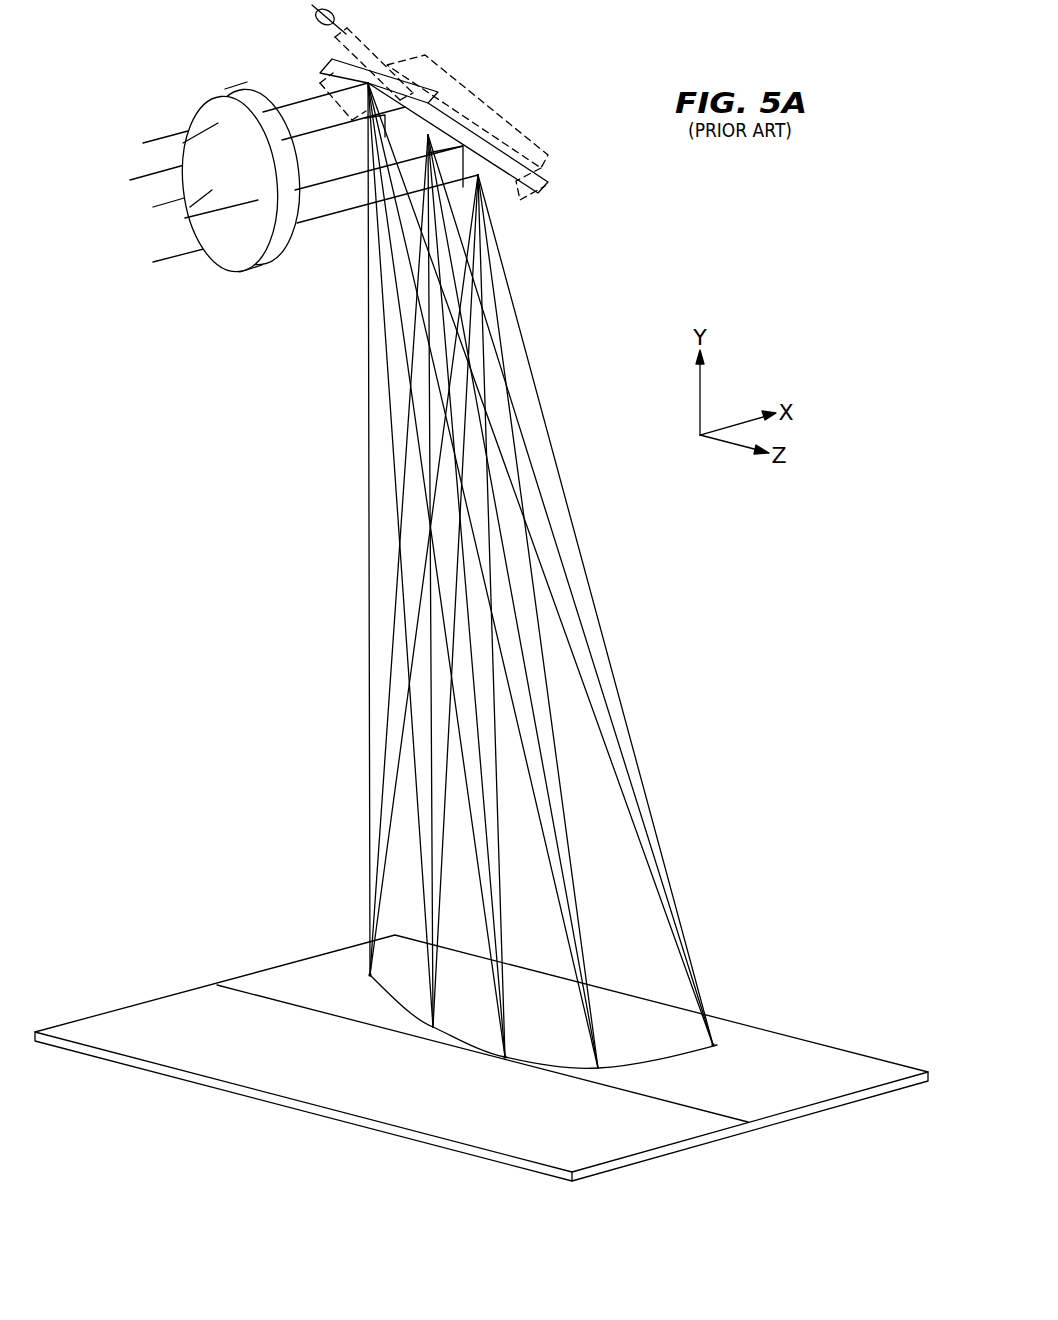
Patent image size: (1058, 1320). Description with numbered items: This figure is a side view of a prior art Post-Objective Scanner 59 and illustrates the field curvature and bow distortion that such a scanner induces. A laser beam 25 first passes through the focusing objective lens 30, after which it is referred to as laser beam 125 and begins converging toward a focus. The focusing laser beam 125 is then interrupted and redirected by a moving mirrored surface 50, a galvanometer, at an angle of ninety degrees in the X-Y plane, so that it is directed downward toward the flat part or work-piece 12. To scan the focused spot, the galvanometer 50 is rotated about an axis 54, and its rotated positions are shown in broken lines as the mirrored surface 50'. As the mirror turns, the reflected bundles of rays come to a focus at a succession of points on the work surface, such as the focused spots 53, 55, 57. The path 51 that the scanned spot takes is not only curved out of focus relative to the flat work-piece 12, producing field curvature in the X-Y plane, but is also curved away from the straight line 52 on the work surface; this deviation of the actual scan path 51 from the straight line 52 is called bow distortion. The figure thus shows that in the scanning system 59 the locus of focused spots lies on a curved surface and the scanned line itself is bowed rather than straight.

The work-piece 12 is at (153, 1000).
The laser beam 25 is at (143, 180).
The lens 30 is at (265, 268).
The laser beam after passing through the lens 125 is at (328, 216).
The moving mirrored surface 50 is at (471, 139).
The moving mirrored surface in rotated position 50' is at (445, 133).
The scanned spot path 51 is at (657, 1063).
The straight line 52 is at (668, 1102).
The focused spot 53 is at (368, 975).
The axis 54 is at (315, 15).
The focused spot 55 is at (505, 1058).
The focused spot 57 is at (717, 1045).
The Post-Objective Scanner 59 is at (256, 447).